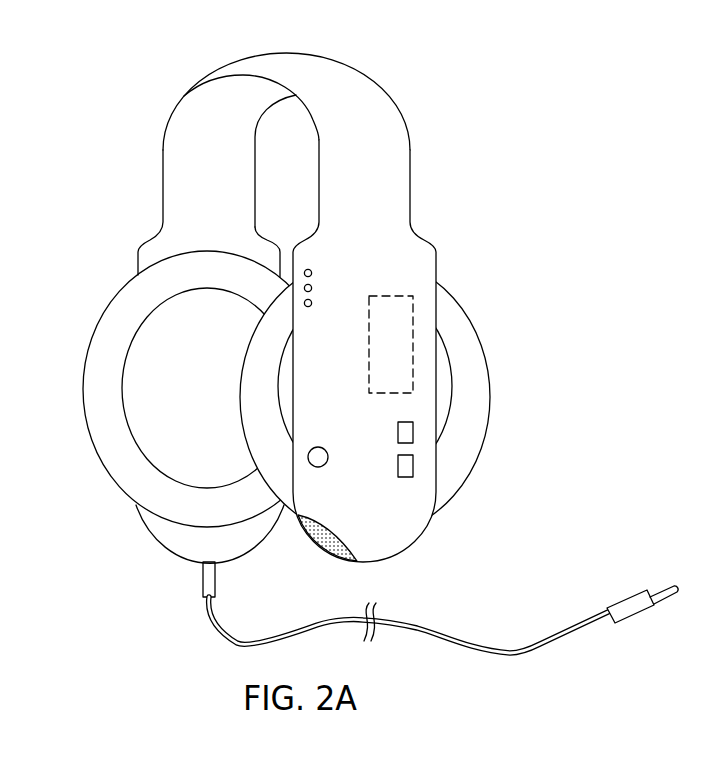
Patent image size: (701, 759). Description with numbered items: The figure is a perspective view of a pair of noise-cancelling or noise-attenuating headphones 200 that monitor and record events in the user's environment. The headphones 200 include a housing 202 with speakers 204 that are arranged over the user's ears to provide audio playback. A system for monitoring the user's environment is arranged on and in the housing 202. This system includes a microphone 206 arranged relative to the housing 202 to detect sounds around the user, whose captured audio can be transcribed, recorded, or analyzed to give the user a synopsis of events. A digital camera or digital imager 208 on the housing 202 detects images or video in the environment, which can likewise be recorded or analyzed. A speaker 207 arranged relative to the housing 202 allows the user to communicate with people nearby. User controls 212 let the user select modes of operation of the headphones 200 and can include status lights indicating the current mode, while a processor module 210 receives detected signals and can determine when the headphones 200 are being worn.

The headphones 200 is at (353, 333).
The housing 202 is at (328, 82).
The speakers 204 is at (150, 366).
The microphone 206 is at (313, 273).
The speaker 207 is at (306, 528).
The digital camera or digital imager 208 is at (317, 447).
The processor module 210 is at (387, 295).
The user controls 212 is at (397, 467).